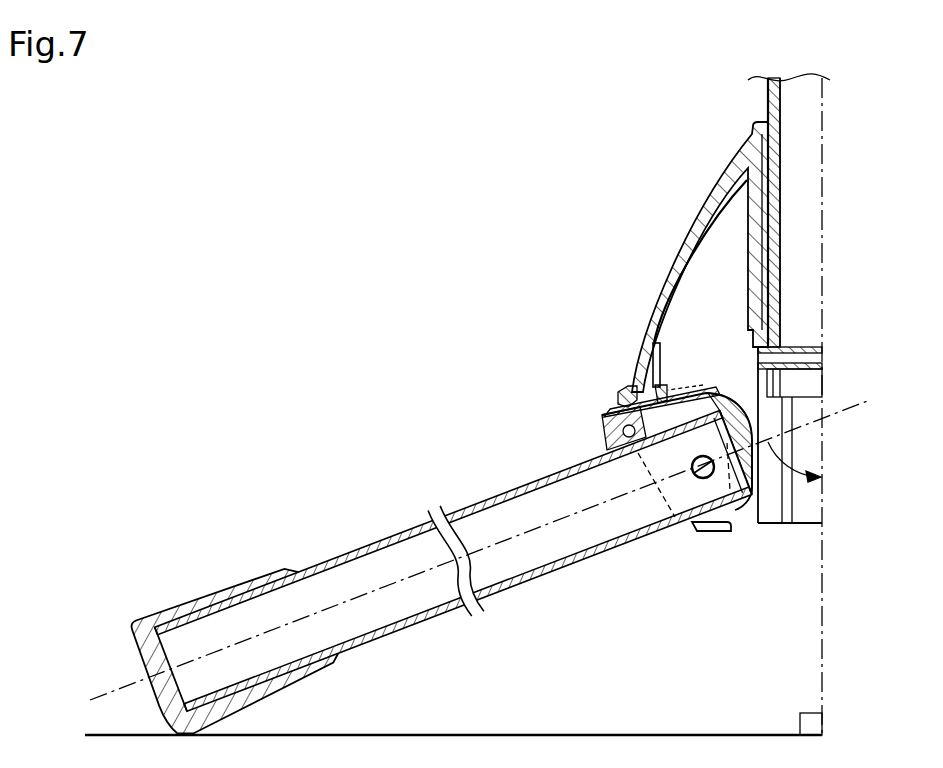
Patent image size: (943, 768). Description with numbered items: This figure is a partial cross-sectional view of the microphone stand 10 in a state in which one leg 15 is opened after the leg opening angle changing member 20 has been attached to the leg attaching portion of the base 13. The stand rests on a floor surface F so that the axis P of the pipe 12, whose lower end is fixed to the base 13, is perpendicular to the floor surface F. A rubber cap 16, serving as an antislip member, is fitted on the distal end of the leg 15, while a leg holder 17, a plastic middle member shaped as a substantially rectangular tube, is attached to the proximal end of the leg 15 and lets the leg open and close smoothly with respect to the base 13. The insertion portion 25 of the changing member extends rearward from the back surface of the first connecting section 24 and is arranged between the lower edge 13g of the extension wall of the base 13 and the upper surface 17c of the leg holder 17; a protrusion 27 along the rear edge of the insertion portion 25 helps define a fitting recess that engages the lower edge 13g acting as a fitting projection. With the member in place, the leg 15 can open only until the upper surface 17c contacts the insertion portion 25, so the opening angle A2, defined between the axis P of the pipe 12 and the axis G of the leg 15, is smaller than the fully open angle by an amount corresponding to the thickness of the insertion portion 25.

The microphone stand 10 is at (850, 263).
The pipe 12 is at (769, 92).
The base 13 is at (677, 252).
The lower edge of the extension wall 13g is at (612, 404).
The leg 15 is at (327, 561).
The rubber cap 16 is at (135, 614).
The leg holder 17 is at (598, 422).
The upper surface of the leg holder 17c is at (707, 384).
The leg opening angle changing member 20 is at (703, 534).
The first connecting section 24 is at (620, 393).
The insertion portion 25 is at (657, 368).
The protrusion 27 is at (664, 384).
The axis of the pipe P is at (824, 125).
The axis of the leg G is at (852, 410).
The floor surface F is at (697, 734).
The opening angle A2 is at (770, 447).